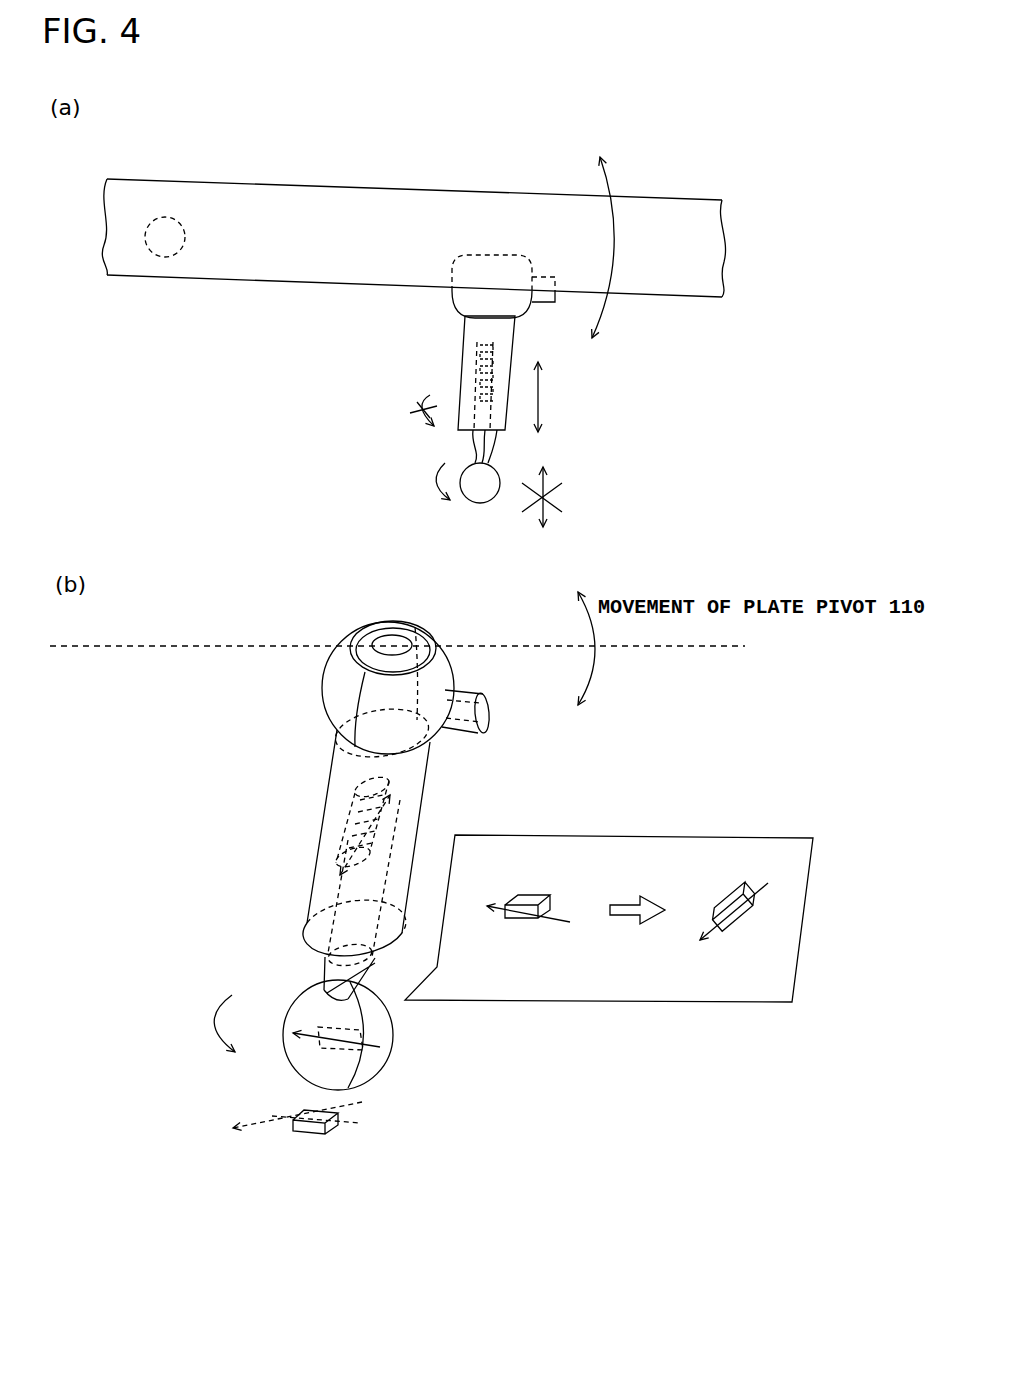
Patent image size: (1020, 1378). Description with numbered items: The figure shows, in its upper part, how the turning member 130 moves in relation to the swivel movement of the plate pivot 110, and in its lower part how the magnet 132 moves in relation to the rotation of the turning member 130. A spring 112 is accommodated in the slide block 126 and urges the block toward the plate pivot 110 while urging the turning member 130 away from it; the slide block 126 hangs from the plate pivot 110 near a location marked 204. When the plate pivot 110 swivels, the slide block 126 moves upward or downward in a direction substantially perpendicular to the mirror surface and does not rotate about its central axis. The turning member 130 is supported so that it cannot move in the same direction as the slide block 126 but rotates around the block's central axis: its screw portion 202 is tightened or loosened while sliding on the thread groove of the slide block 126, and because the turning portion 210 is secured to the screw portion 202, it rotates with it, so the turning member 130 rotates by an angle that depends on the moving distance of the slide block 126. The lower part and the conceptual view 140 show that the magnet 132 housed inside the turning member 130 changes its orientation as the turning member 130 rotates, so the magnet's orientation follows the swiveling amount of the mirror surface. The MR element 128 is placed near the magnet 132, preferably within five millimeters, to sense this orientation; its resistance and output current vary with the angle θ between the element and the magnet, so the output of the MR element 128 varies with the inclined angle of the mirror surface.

The plate pivot 110 is at (665, 207).
The pivot hole 204 is at (165, 235).
The spring 112 is at (514, 348).
The slide block 126 is at (463, 358).
The screw portion 202 is at (470, 440).
The turning member 130 is at (488, 455).
The turning portion 210 is at (480, 503).
The magnet 132 is at (350, 1052).
The conceptual view 140 is at (642, 835).
The MR element 128 is at (310, 1135).